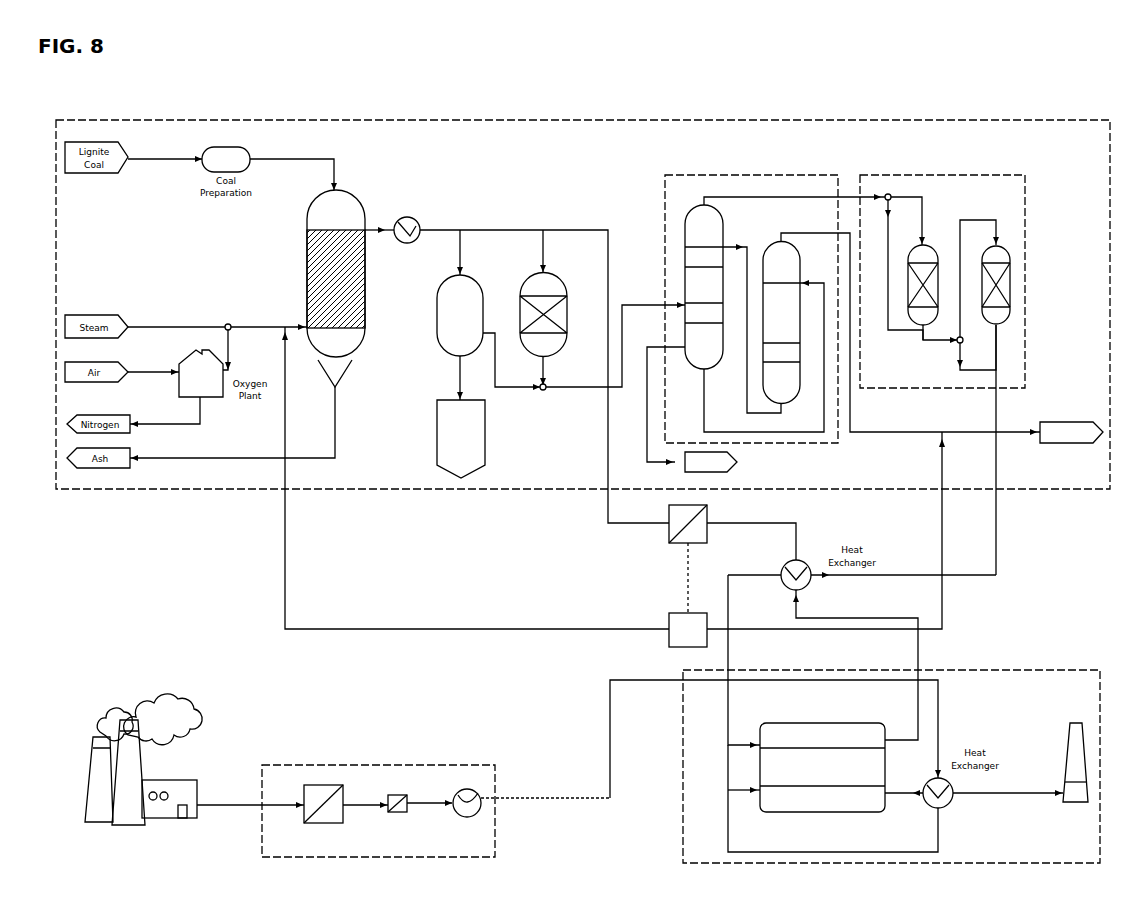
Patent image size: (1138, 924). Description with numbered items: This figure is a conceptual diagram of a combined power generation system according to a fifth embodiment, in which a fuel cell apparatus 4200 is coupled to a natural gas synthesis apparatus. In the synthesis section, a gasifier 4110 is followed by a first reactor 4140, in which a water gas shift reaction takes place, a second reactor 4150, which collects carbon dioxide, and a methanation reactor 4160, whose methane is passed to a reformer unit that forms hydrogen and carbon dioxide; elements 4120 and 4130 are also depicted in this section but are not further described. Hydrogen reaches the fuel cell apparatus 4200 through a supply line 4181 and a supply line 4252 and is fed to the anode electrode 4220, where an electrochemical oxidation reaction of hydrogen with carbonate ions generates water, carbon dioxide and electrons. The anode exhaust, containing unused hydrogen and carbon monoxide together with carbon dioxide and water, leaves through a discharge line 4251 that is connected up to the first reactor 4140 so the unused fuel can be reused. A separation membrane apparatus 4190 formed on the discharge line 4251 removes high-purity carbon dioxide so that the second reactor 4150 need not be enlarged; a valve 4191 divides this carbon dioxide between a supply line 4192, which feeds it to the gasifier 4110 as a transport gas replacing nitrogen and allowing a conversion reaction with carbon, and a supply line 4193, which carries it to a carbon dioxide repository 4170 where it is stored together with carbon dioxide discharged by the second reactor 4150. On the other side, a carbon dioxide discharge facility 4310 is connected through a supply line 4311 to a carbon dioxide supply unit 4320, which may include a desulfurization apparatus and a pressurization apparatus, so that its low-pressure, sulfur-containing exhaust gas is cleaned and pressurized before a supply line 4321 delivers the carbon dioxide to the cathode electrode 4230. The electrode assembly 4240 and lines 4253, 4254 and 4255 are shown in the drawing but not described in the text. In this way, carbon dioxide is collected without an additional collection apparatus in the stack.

The gasifier 4110 is at (348, 192).
The heat exchanger 4120 is at (412, 217).
The water separator 4130 is at (437, 320).
The first reactor 4140 is at (557, 275).
The second reactor 4150 is at (757, 175).
The methanation reactor 4160 is at (942, 175).
The carbon dioxide repository 4170 is at (1068, 422).
The supply line 4181 is at (996, 517).
The separation membrane apparatus 4190 is at (669, 535).
The valve 4191 is at (669, 622).
The supply line 4192 is at (414, 629).
The supply line 4193 is at (942, 605).
The fuel cell apparatus 4200 is at (1045, 670).
The anode electrode 4220 is at (810, 723).
The cathode electrode 4230 is at (810, 812).
The fuel cell stack 4240 is at (760, 770).
The discharge line of the anode electrode 4251 is at (918, 655).
The supply line 4252 is at (728, 655).
The cathode gas line 4253 is at (897, 795).
The flue gas supply line 4254 is at (938, 708).
The lean CO2 discharge line 4255 is at (1023, 793).
The carbon dioxide discharge facility 4310 is at (167, 780).
The supply line 4311 is at (235, 805).
The carbon dioxide supply unit 4320 is at (379, 765).
The supply line 4321 is at (525, 798).